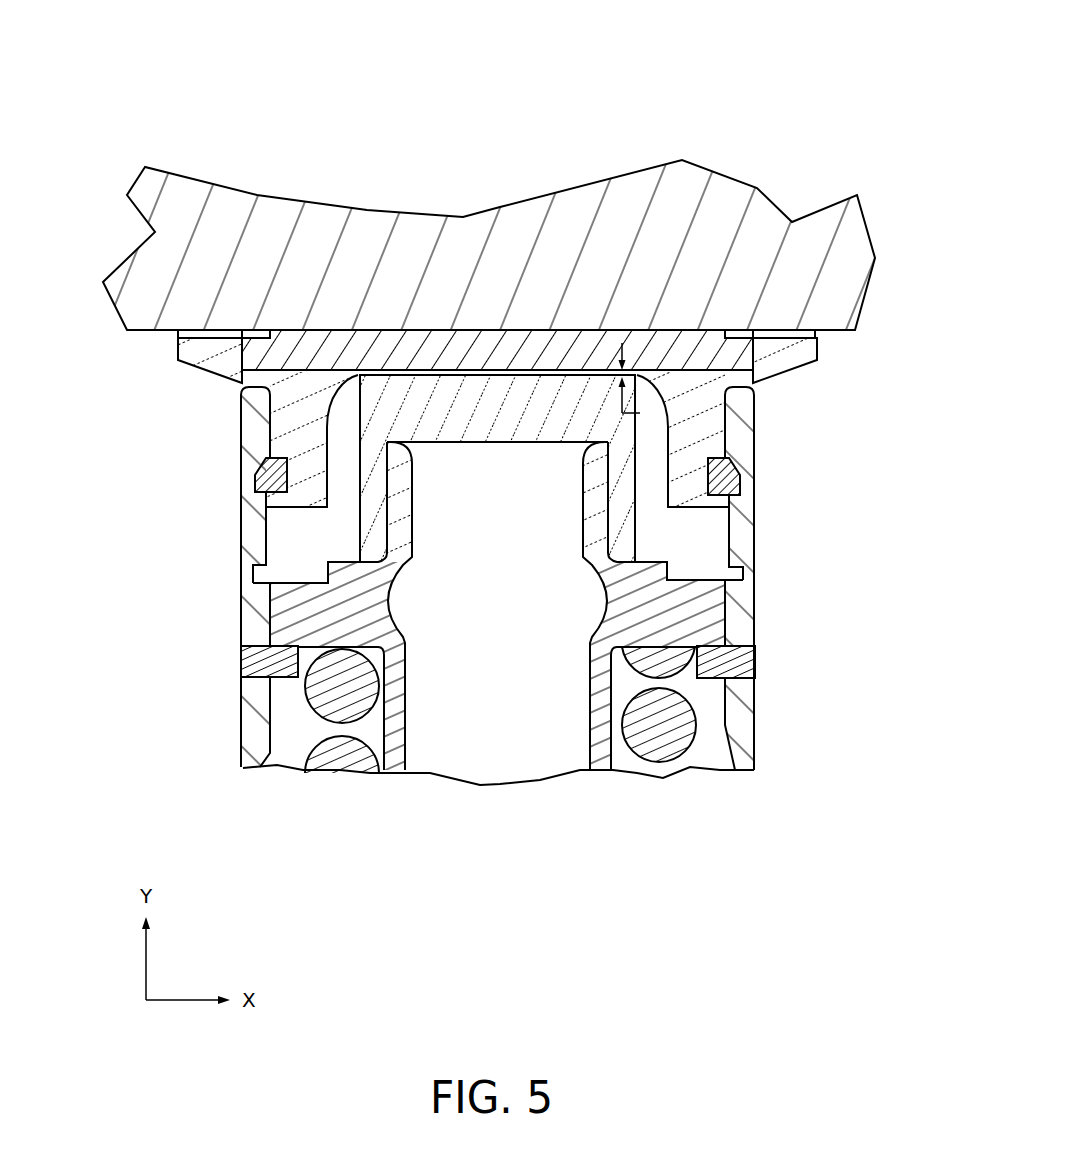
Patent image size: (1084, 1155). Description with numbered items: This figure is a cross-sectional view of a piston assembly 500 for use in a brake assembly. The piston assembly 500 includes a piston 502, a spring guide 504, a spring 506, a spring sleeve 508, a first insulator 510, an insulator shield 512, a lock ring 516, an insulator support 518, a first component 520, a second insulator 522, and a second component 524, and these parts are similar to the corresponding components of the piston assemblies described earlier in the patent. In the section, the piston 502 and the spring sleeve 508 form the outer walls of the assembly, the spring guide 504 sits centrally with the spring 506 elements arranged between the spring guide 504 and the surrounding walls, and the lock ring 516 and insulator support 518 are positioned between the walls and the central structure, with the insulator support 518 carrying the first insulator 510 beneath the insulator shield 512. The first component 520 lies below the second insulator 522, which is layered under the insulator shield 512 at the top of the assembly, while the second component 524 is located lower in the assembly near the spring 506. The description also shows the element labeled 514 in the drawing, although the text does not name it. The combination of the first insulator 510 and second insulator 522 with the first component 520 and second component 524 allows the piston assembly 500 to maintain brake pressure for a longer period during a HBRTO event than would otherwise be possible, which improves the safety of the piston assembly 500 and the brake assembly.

The piston assembly 500 is at (172, 96).
The piston 502 is at (252, 757).
The spring guide 504 is at (397, 767).
The spring 506 is at (327, 765).
The spring sleeve 508 is at (713, 760).
The first insulator 510 is at (195, 358).
The insulator shield 512 is at (200, 332).
The mounting structure 514 is at (838, 254).
The lock ring 516 is at (257, 572).
The insulator support 518 is at (263, 480).
The first component 520 is at (432, 376).
The second insulator 522 is at (572, 343).
The second component 524 is at (244, 660).